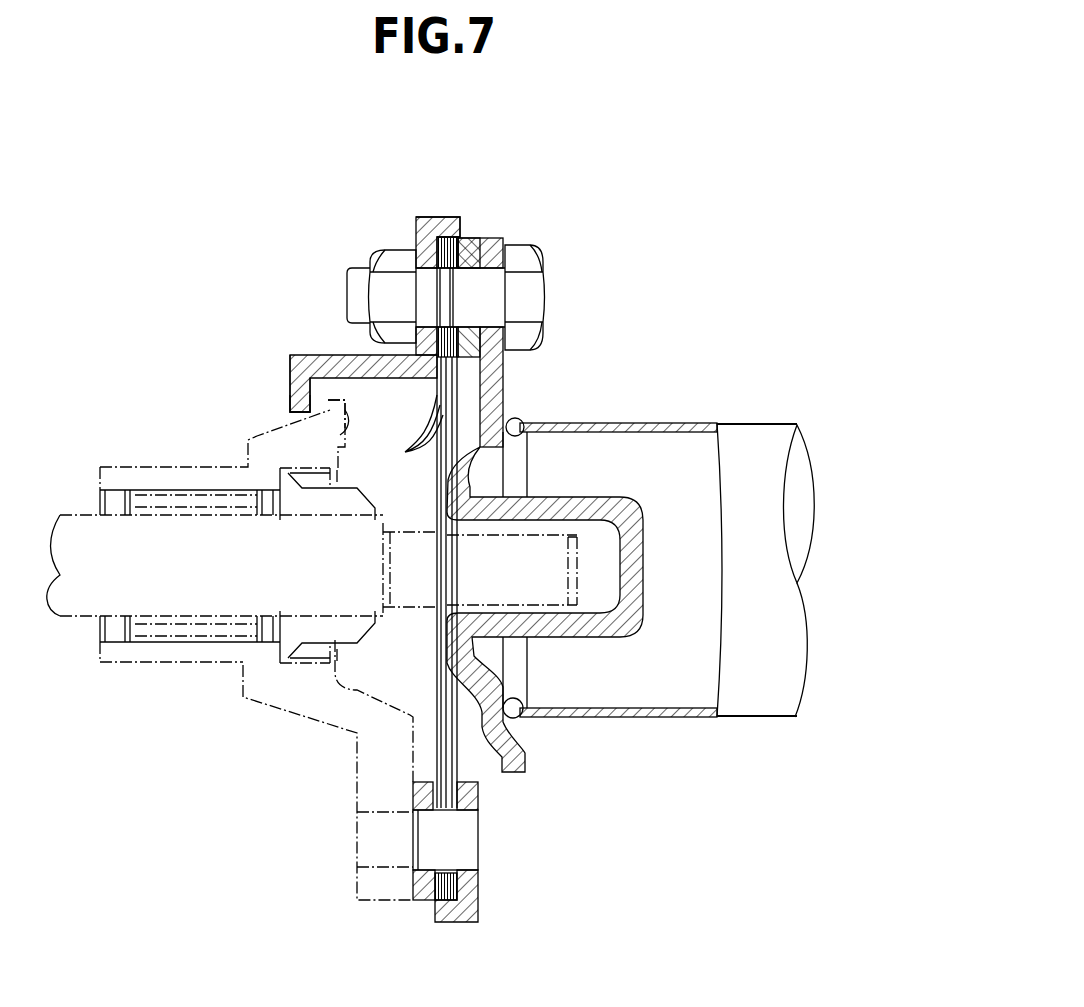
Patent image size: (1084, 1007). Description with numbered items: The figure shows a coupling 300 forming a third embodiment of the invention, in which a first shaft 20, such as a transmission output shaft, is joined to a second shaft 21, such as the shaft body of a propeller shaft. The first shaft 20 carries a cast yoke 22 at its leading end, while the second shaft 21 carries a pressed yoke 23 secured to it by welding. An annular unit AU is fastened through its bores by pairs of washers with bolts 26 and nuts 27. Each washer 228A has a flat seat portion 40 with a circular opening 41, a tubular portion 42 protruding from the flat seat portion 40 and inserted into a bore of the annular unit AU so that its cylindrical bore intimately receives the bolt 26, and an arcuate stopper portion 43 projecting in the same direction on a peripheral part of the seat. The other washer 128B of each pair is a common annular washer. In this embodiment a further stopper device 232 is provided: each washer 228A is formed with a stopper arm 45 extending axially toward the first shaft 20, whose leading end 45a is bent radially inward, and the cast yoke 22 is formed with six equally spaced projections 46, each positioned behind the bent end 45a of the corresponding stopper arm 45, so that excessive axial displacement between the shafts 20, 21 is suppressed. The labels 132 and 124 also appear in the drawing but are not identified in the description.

The coupling 300 is at (664, 149).
The washer 228A is at (395, 222).
The arcuate stopper portion 43 is at (480, 197).
The plate 132 is at (472, 263).
The washer 128B is at (472, 240).
The nut 27 is at (382, 258).
The circular opening 41 is at (418, 318).
The bolt 26 is at (528, 298).
The tubular portion 42 is at (470, 345).
The flat seat portion 40 is at (420, 362).
The stopper arm 45 is at (295, 378).
The leading end 45a is at (292, 400).
The pressed yoke 23 is at (500, 378).
The second shaft 21 is at (655, 718).
The annular unit AU is at (465, 760).
The wires 124 is at (399, 431).
The first shaft 20 is at (178, 600).
The cast yoke 22 is at (310, 700).
The stopper device 232 is at (288, 414).
The projection 46 is at (362, 409).